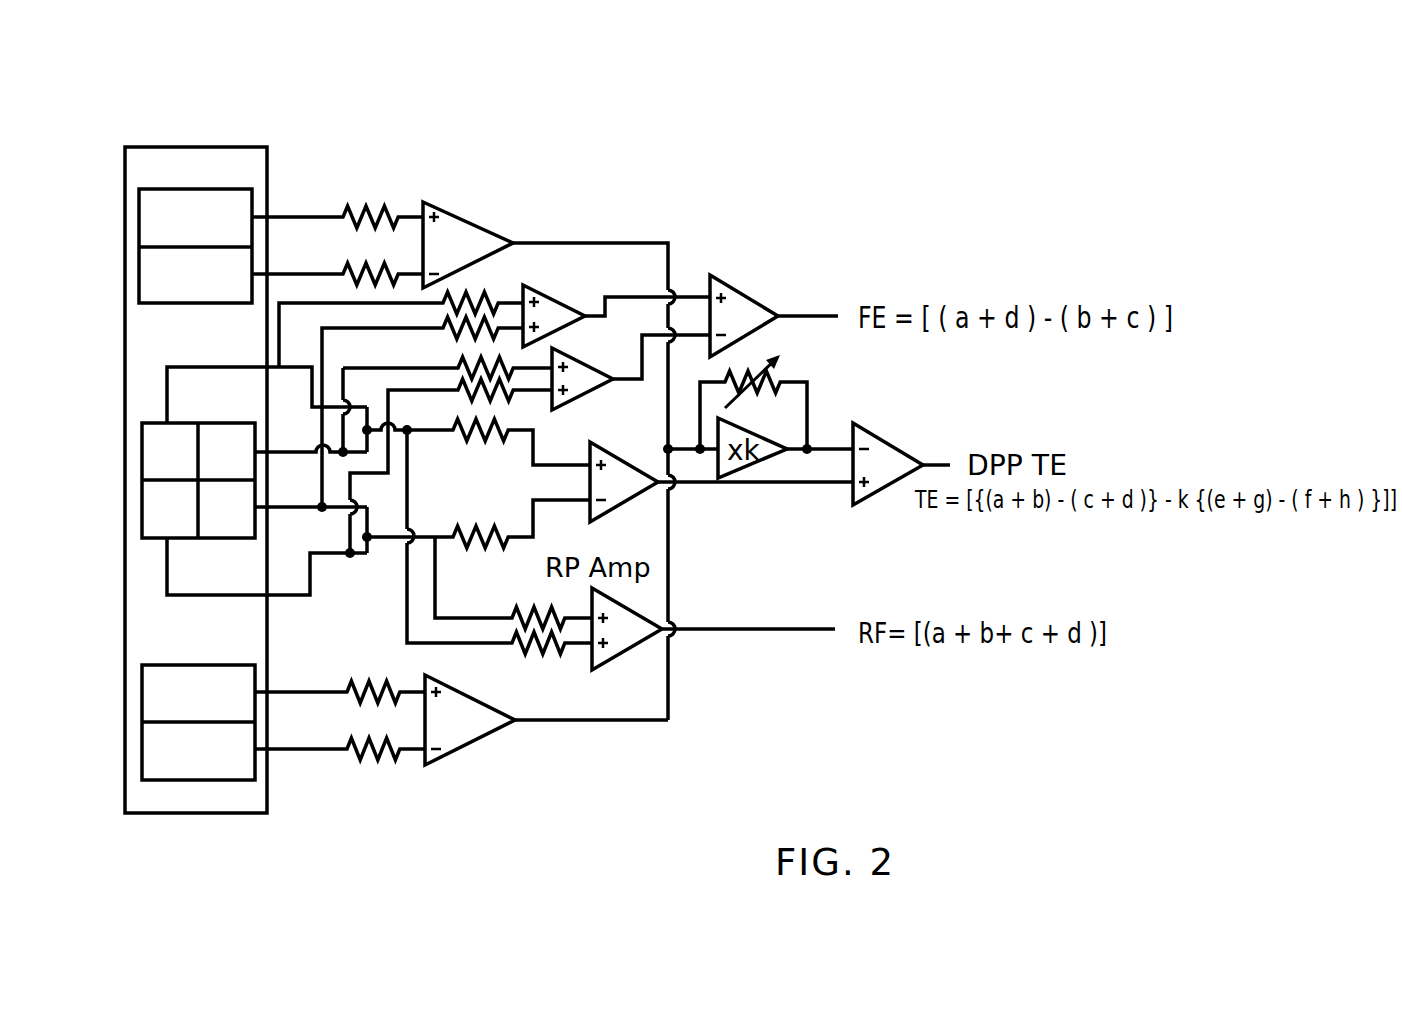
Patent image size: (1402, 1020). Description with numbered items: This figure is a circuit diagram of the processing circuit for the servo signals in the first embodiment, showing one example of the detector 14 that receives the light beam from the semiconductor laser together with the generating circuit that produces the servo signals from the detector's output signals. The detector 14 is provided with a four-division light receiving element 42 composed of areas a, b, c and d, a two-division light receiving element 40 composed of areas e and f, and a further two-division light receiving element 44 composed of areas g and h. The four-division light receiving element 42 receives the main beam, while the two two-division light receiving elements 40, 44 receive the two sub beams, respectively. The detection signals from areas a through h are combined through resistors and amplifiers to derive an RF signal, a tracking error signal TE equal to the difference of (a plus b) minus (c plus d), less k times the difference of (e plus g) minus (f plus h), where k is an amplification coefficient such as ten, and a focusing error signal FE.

The detector 14 is at (172, 147).
The two-division light receiving element 40 is at (139, 223).
The four-division light receiving element 42 is at (142, 456).
The two-division light receiving element 44 is at (142, 702).